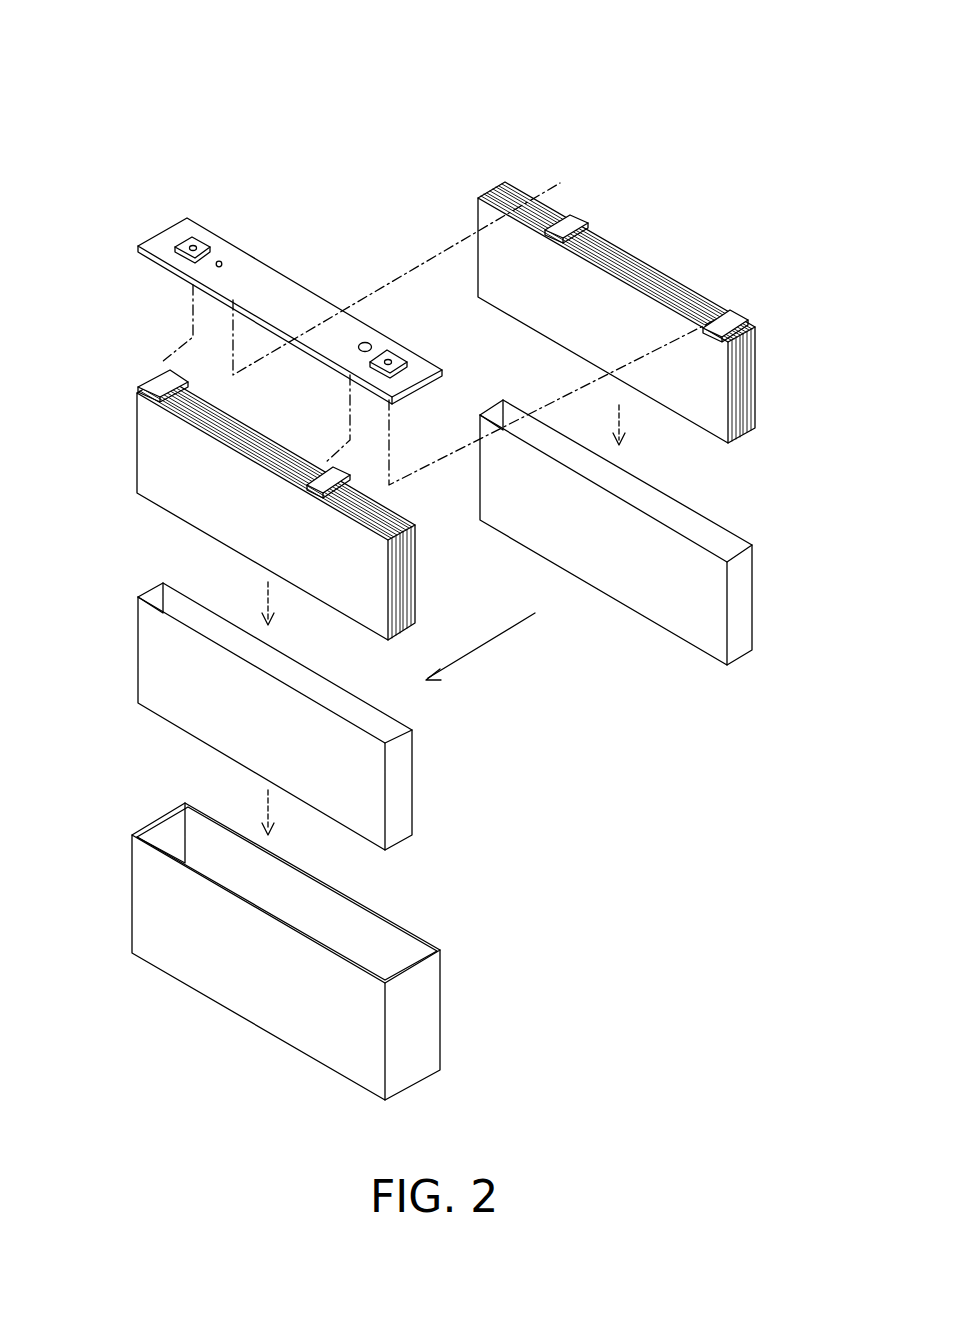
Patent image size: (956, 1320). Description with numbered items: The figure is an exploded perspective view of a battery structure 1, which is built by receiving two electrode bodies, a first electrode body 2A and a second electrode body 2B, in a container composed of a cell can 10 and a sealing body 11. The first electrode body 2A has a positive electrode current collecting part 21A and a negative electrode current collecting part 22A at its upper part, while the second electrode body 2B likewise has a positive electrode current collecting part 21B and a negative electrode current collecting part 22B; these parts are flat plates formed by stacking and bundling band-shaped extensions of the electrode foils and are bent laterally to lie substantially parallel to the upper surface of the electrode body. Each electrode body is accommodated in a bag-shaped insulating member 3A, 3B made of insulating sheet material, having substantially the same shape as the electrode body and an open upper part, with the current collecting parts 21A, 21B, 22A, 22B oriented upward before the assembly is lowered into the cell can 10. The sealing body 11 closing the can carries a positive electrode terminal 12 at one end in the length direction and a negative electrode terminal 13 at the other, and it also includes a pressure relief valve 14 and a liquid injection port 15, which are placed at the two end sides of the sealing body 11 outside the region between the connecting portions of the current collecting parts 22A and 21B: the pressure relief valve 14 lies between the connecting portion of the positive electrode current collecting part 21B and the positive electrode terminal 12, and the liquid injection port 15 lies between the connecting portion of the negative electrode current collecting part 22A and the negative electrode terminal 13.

The battery structure 1 is at (435, 116).
The cell can 10 is at (255, 1003).
The sealing body 11 is at (275, 285).
The positive electrode terminal 12 is at (397, 352).
The negative electrode terminal 13 is at (199, 234).
The pressure relief valve 14 is at (372, 342).
The liquid injection port 15 is at (223, 260).
The first electrode body 2A is at (674, 266).
The second electrode body 2B is at (127, 483).
The positive electrode current collecting part 21A is at (736, 318).
The positive electrode current collecting part 21B is at (323, 472).
The negative electrode current collecting part 22A is at (561, 222).
The negative electrode current collecting part 22B is at (160, 376).
The insulating member 3A is at (740, 600).
The insulating member 3B is at (400, 778).